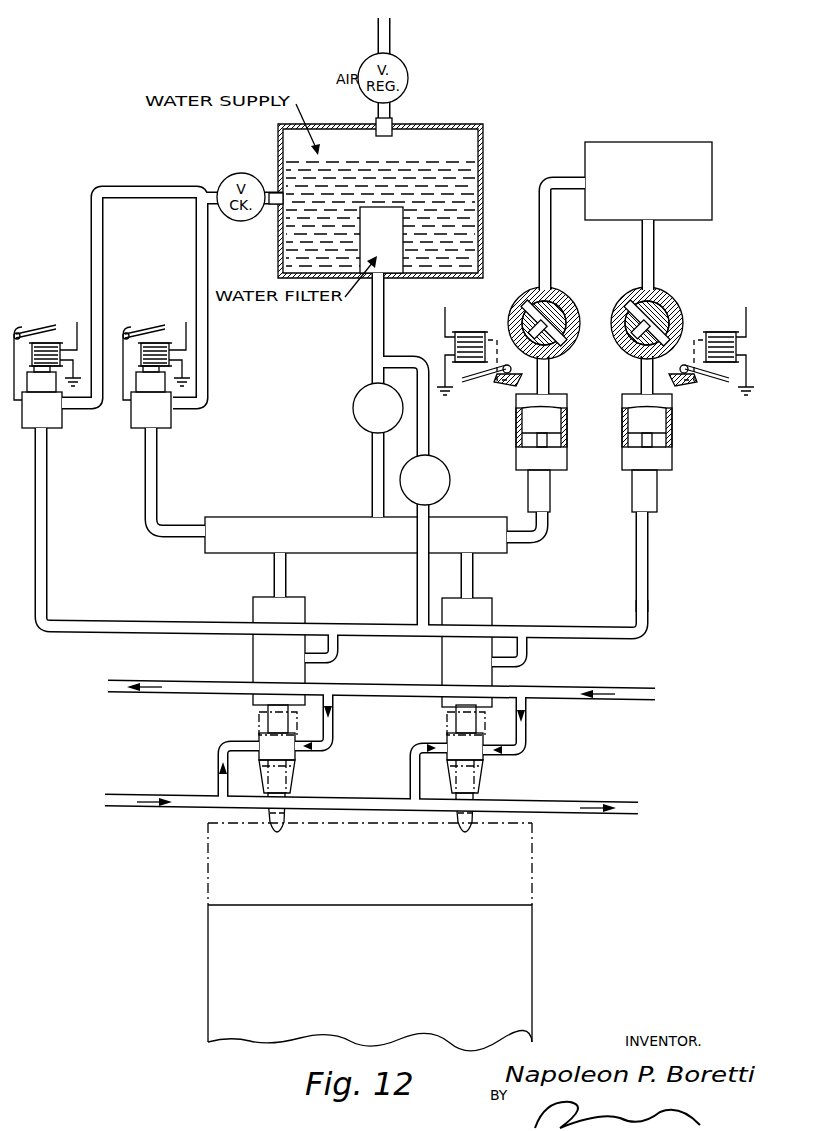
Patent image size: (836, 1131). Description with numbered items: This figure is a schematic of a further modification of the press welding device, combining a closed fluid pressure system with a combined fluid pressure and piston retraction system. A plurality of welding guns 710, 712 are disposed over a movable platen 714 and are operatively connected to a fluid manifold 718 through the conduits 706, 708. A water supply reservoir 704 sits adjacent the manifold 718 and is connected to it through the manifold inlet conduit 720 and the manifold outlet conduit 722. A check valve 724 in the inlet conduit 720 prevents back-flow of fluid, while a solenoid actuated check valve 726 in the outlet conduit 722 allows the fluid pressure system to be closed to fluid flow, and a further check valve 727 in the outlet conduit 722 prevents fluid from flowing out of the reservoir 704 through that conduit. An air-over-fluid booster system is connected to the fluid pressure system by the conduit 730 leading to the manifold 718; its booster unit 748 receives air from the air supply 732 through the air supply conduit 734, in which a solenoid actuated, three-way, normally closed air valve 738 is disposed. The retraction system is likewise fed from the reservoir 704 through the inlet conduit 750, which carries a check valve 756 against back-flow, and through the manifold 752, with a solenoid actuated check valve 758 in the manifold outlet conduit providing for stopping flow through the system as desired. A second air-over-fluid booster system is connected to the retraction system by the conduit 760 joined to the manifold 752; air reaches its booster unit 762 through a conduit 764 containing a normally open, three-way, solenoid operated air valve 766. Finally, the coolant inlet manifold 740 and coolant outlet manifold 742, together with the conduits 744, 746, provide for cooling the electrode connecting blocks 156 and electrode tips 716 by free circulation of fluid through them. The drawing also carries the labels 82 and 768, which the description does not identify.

The water supply reservoir 704 is at (445, 138).
The check valve 727 is at (230, 190).
The air supply 732 is at (682, 162).
The air supply conduit 734 is at (551, 238).
The conduit 764 is at (655, 242).
The solenoid actuated three-way normally closed air valve 738 is at (522, 303).
The normally open three-way solenoid operated air valve 766 is at (676, 308).
The piston 82 is at (530, 427).
The booster unit 748 is at (532, 462).
The booster unit 762 is at (668, 464).
The solenoid actuated check valve 758 is at (50, 420).
The solenoid actuated check valve 726 is at (172, 418).
The manifold outlet conduit 722 is at (155, 492).
The check valve 724 is at (360, 404).
The manifold inlet conduit 720 is at (372, 464).
The check valve 756 is at (434, 484).
The fluid manifold 718 is at (268, 535).
The conduit 730 is at (546, 530).
The conduit 706 is at (282, 572).
The conduit 708 is at (470, 568).
The inlet conduit 750 is at (420, 566).
The welding gun 710 is at (250, 608).
The welding gun 712 is at (500, 610).
The conduit 760 is at (650, 578).
The manifold 752 is at (108, 640).
The connecting line 768 is at (336, 648).
The coolant outlet manifold 742 is at (160, 692).
The conduit 744 is at (335, 718).
The conduit 746 is at (218, 746).
The electrode connecting block 156 is at (292, 781).
The coolant inlet manifold 740 is at (108, 806).
The electrode tip 716 is at (280, 845).
The movable platen 714 is at (536, 924).